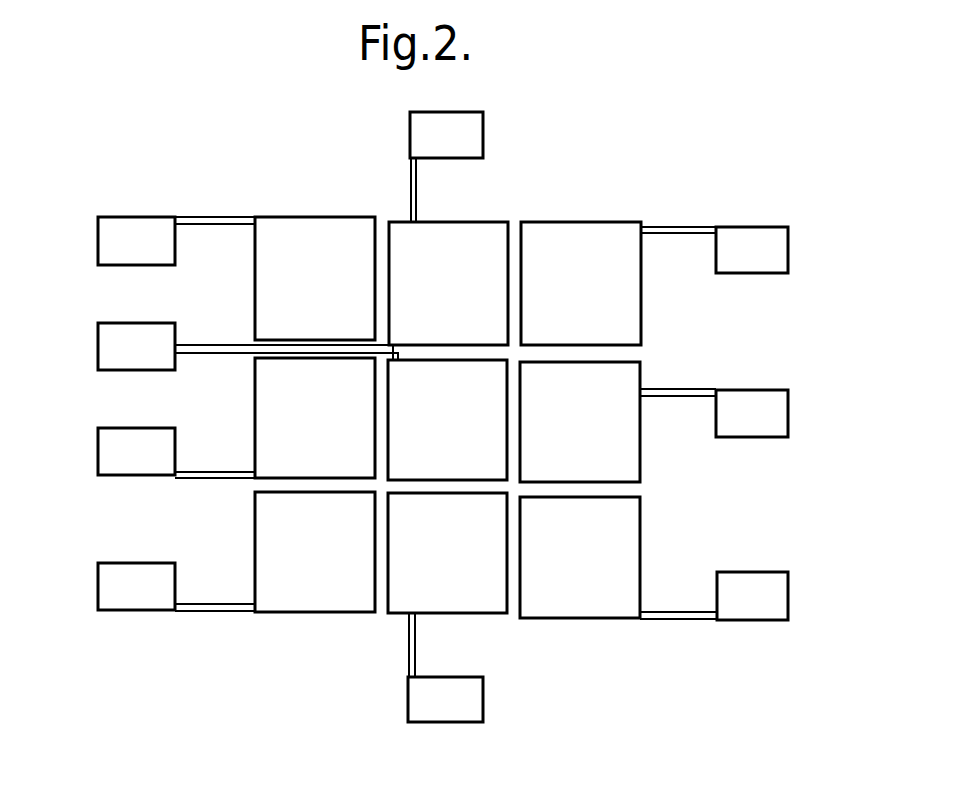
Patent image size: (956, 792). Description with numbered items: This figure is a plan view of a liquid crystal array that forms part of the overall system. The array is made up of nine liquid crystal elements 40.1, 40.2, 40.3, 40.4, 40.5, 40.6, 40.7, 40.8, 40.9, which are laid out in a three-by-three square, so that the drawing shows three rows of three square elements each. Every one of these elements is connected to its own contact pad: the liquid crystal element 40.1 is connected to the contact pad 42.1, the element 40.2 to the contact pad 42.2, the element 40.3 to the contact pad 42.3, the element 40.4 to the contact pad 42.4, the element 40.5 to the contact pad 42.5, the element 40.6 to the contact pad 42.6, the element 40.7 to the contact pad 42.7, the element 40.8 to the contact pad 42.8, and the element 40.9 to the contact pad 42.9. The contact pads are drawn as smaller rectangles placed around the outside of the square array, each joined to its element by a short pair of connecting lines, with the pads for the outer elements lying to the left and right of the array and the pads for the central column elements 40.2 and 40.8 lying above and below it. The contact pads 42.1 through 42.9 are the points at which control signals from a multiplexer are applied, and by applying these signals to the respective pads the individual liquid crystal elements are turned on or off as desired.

The liquid crystal element 40.1 is at (318, 222).
The liquid crystal element 40.2 is at (487, 222).
The liquid crystal element 40.3 is at (613, 223).
The liquid crystal element 40.4 is at (260, 373).
The liquid crystal element 40.5 is at (410, 460).
The liquid crystal element 40.6 is at (620, 460).
The liquid crystal element 40.7 is at (273, 593).
The liquid crystal element 40.8 is at (475, 602).
The liquid crystal element 40.9 is at (613, 552).
The contact pad 42.1 is at (146, 222).
The contact pad 42.2 is at (483, 130).
The contact pad 42.3 is at (780, 205).
The contact pad 42.4 is at (127, 460).
The contact pad 42.5 is at (127, 330).
The contact pad 42.6 is at (750, 397).
The contact pad 42.7 is at (125, 602).
The contact pad 42.8 is at (468, 710).
The contact pad 42.9 is at (765, 605).